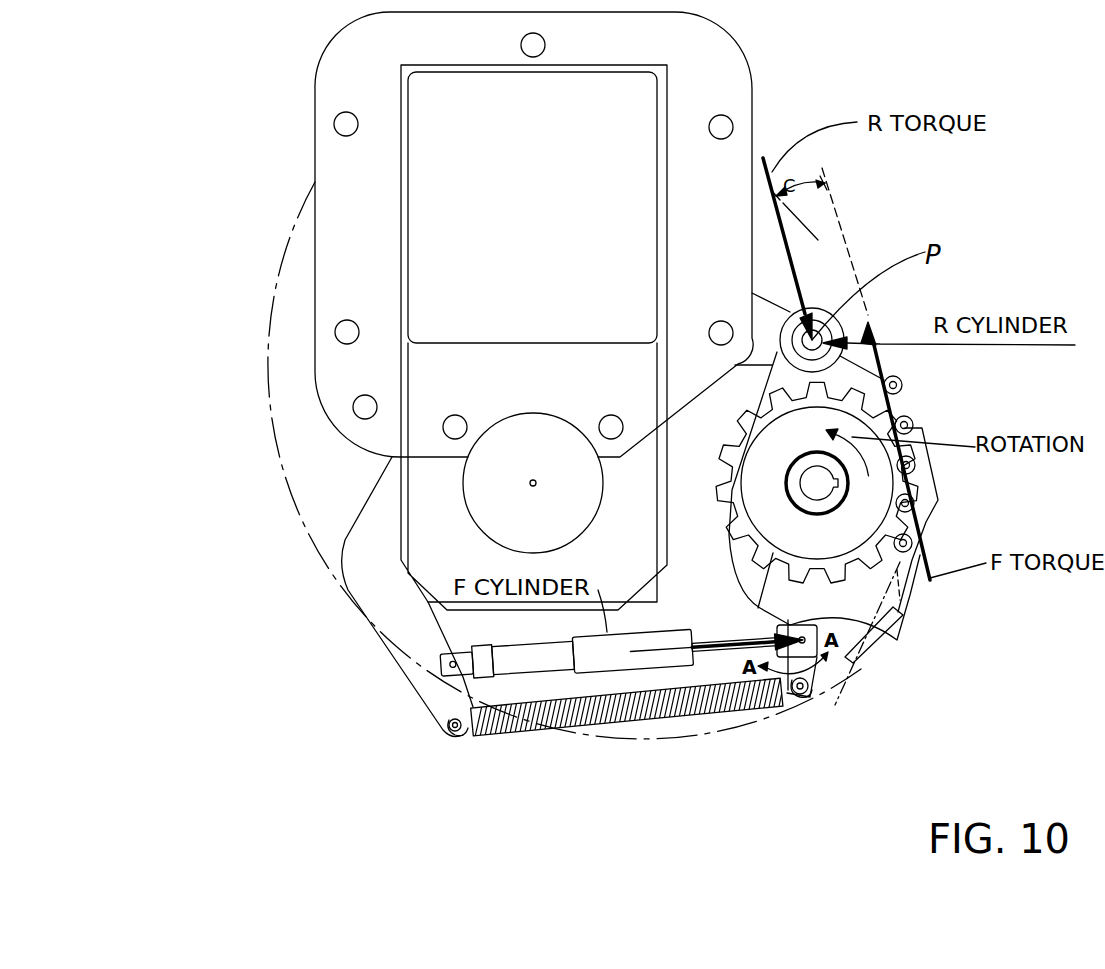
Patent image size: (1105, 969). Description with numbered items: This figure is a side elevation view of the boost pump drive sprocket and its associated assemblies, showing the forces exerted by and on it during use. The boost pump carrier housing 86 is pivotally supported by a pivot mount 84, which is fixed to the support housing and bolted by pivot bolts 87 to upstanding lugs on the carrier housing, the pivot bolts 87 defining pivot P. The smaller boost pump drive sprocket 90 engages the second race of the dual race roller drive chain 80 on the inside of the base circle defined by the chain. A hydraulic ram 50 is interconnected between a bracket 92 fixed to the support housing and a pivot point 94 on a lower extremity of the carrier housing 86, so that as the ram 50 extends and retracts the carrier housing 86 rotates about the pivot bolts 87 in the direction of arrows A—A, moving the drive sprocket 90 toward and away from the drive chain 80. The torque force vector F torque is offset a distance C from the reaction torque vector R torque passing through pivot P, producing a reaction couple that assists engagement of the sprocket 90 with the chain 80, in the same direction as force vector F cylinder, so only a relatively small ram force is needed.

The hydraulic ram 50 is at (587, 667).
The dual race roller drive chain 80 is at (910, 550).
The pivot mount 84 is at (762, 338).
The boost pump carrier housing 86 is at (938, 503).
The pivot bolts 87 is at (826, 326).
The boost pump drive sprocket 90 is at (903, 420).
The bracket 92 is at (370, 588).
The pivot point 94 is at (877, 613).